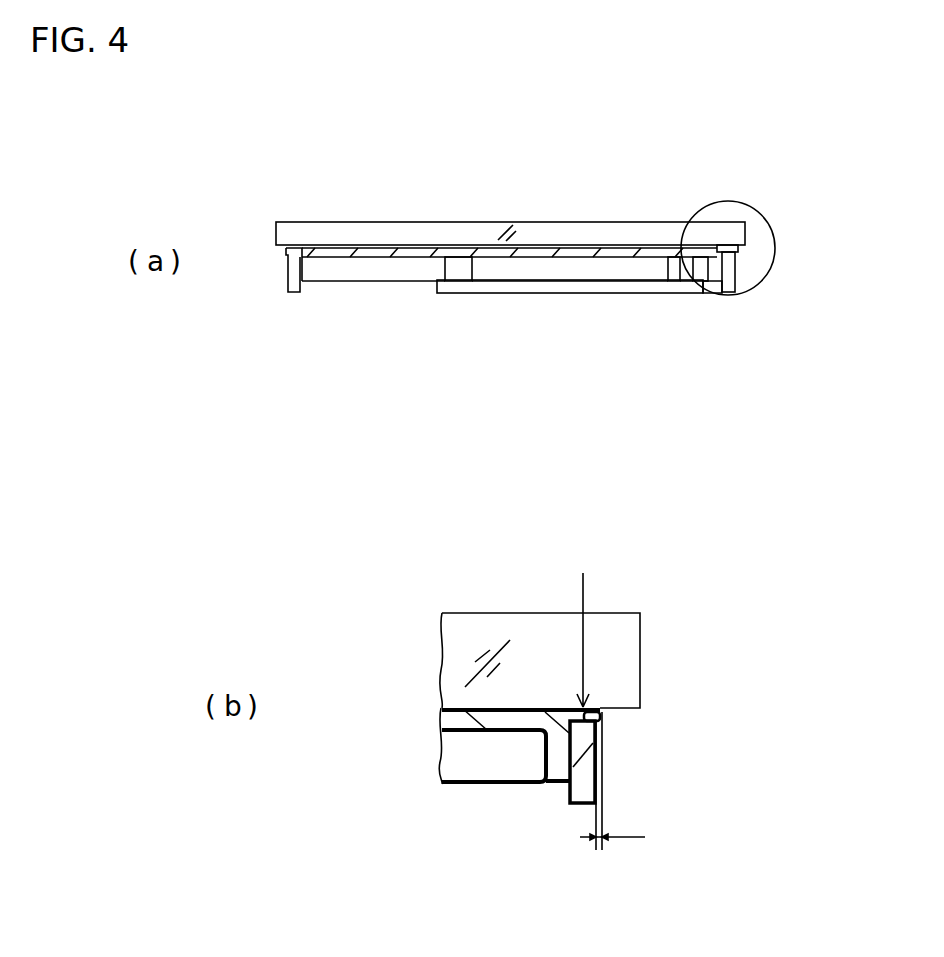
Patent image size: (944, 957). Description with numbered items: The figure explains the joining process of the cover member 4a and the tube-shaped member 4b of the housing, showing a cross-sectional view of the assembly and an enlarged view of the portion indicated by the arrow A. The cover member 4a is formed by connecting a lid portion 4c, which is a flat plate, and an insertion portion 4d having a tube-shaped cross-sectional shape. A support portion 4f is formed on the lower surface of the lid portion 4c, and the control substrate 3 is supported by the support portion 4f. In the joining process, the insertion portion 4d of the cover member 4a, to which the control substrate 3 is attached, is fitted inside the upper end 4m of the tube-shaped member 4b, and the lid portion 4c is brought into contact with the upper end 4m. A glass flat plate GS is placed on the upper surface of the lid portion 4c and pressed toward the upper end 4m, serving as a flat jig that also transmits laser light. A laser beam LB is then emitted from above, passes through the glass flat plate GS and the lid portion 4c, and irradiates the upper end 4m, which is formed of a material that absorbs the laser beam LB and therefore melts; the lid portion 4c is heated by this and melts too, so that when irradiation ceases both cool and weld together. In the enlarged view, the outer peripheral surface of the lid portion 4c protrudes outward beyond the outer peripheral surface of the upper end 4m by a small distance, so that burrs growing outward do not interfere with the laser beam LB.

The glass flat plate GS is at (423, 222).
The support portion 4f is at (462, 265).
The control substrate 3 is at (538, 293).
The cover member 4a is at (738, 248).
The tube-shaped member 4b is at (728, 293).
The lid portion 4c is at (442, 720).
The insertion portion 4d is at (558, 774).
The upper end 4m is at (595, 712).
The arrow A is at (783, 203).
The laser beam LB is at (583, 602).